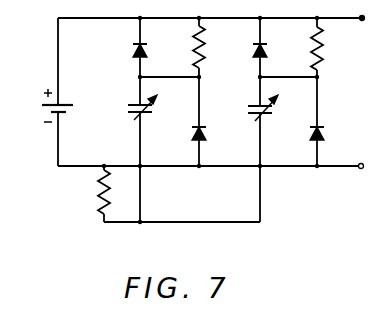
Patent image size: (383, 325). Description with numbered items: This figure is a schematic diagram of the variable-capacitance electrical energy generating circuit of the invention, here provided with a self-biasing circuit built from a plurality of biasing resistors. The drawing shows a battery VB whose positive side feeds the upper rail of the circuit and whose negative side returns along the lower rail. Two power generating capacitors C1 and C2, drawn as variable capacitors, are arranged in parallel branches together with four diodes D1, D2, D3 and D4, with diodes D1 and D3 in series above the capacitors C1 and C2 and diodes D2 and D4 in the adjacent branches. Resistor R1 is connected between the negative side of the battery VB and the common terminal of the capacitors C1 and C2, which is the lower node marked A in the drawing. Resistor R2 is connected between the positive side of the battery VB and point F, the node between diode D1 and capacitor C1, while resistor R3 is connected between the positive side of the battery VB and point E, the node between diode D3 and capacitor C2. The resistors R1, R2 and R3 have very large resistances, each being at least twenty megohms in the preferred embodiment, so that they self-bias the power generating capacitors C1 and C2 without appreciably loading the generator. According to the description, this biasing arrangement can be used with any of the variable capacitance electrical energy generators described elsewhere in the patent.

The battery VB is at (46, 105).
The resistor R1 is at (92, 194).
The resistor R2 is at (209, 47).
The resistor R3 is at (327, 47).
The diode D1 is at (151, 47).
The diode D2 is at (208, 121).
The diode D3 is at (270, 47).
The diode D4 is at (326, 121).
The power generating capacitor C1 is at (131, 149).
The power generating capacitor C2 is at (249, 149).
The point A is at (168, 165).
The point E is at (257, 77).
The point F is at (137, 77).